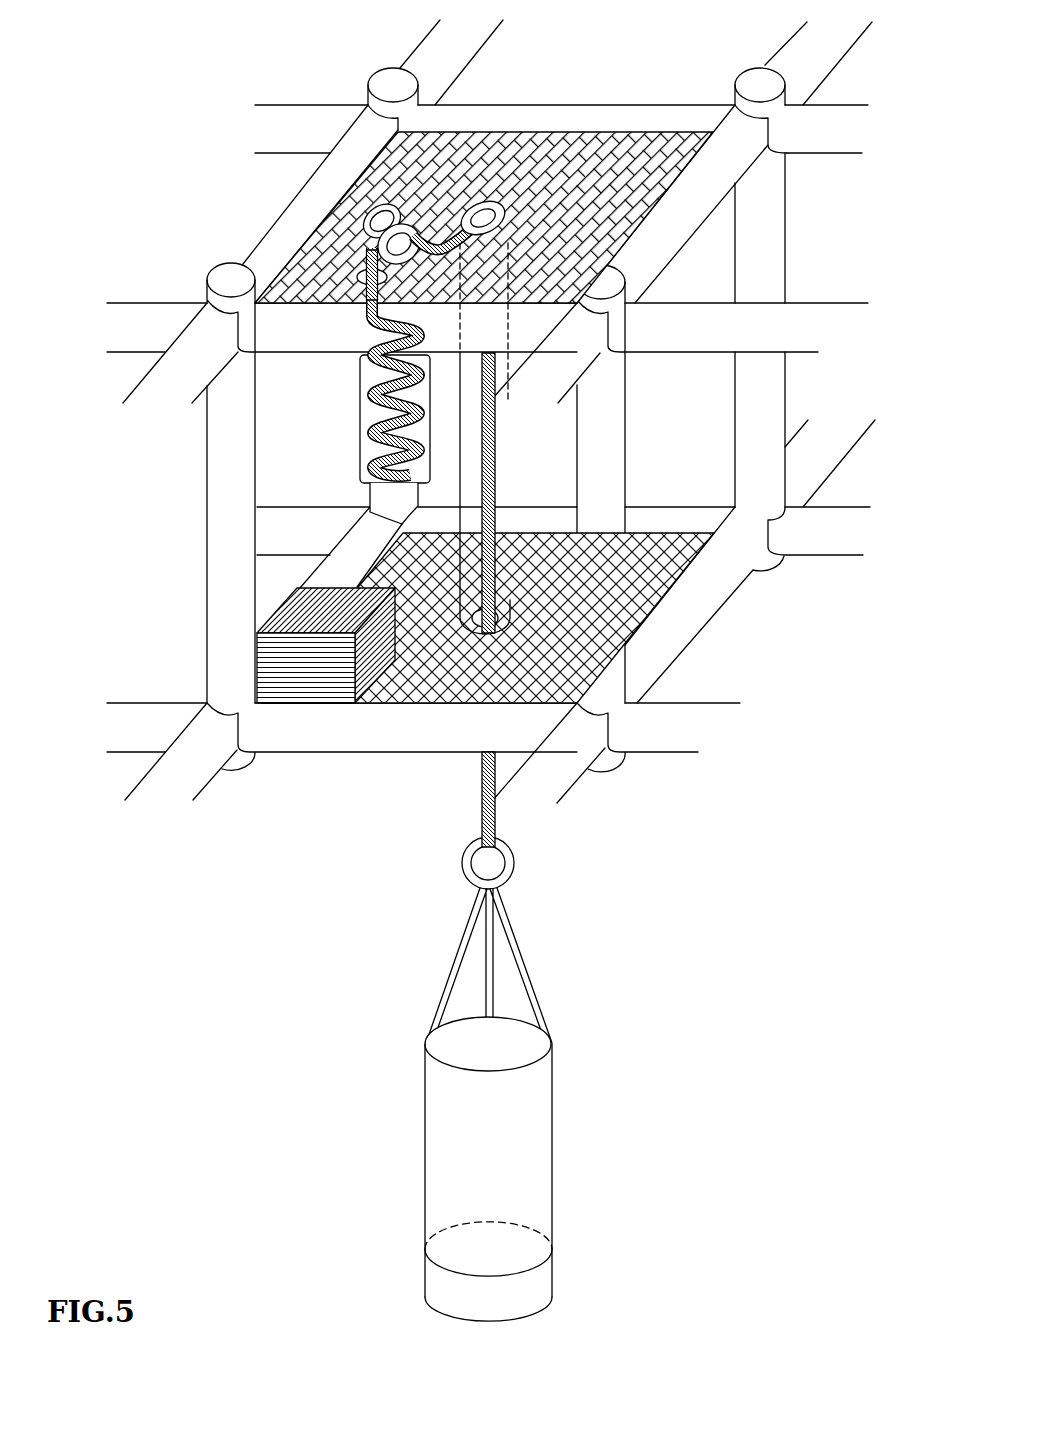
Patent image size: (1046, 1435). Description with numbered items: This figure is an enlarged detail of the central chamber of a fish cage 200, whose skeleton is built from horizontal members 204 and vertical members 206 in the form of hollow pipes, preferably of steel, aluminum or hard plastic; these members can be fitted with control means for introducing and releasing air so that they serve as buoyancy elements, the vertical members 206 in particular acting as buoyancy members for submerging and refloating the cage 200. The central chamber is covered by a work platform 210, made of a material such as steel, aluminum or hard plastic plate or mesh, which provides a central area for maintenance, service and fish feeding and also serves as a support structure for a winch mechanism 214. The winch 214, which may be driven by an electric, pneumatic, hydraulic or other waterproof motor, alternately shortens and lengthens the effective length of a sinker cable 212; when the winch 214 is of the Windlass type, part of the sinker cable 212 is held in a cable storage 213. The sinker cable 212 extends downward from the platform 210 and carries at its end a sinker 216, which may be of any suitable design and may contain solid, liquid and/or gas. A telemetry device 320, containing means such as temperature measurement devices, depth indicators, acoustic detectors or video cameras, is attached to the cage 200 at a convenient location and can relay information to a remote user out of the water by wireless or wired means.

The fish cage 200 is at (508, 410).
The horizontal members 204 is at (762, 217).
The vertical members 206 is at (732, 153).
The work platform 210 is at (377, 196).
The sinker cable 212 is at (482, 787).
The cable storage 213 is at (363, 432).
The winch mechanism 214 is at (333, 242).
The sinker 216 is at (427, 1130).
The telemetry device 320 is at (255, 660).